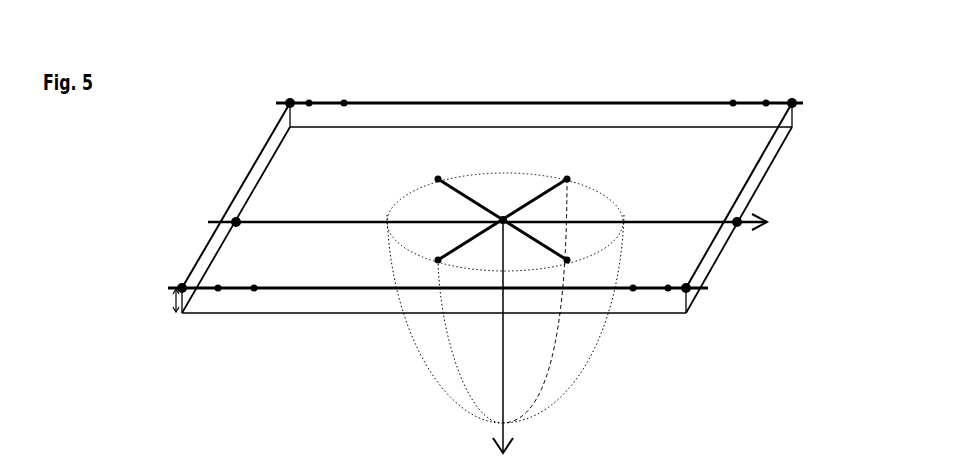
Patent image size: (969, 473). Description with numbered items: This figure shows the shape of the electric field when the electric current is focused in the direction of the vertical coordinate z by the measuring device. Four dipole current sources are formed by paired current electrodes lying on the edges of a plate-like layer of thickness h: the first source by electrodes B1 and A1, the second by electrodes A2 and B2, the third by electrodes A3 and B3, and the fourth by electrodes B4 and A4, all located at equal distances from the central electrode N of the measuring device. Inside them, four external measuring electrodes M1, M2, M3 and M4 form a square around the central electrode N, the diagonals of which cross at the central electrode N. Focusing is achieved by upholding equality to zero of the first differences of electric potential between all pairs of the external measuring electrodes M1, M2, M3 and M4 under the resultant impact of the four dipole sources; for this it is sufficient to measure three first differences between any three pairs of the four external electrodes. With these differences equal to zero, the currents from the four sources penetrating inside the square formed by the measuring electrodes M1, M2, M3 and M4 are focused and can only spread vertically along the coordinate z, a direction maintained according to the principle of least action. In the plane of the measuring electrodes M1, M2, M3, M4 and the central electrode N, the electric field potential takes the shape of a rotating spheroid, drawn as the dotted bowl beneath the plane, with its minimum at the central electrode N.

The central electrode N is at (502, 219).
The external measuring electrode M1 is at (456, 340).
The external measuring electrode M2 is at (580, 270).
The external measuring electrode M3 is at (544, 288).
The external measuring electrode M4 is at (425, 168).
The current electrode of dipole source B1A1 A1 is at (256, 276).
The current electrode of dipole source A2B2 A2 is at (635, 276).
The current electrode of dipole source A3B3 A3 is at (735, 92).
The current electrode of dipole source B4A4 A4 is at (345, 92).
The current electrode of dipole source B1A1 B1 is at (223, 276).
The current electrode of dipole source A2B2 B2 is at (668, 276).
The current electrode of dipole source A3B3 B3 is at (765, 92).
The current electrode of dipole source B4A4 B4 is at (309, 92).
The plate thickness h is at (170, 301).
The vertical coordinate z is at (503, 347).